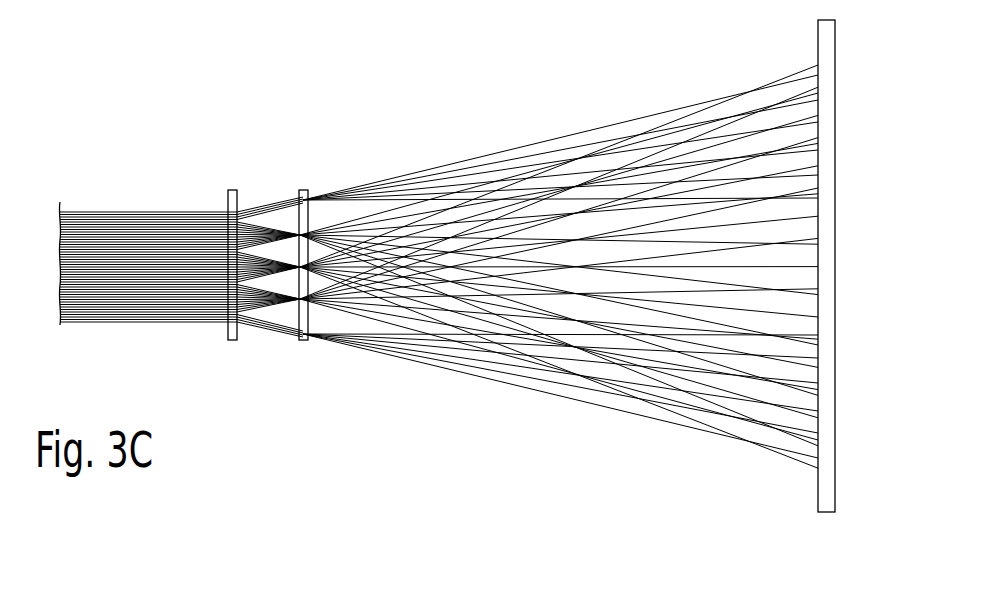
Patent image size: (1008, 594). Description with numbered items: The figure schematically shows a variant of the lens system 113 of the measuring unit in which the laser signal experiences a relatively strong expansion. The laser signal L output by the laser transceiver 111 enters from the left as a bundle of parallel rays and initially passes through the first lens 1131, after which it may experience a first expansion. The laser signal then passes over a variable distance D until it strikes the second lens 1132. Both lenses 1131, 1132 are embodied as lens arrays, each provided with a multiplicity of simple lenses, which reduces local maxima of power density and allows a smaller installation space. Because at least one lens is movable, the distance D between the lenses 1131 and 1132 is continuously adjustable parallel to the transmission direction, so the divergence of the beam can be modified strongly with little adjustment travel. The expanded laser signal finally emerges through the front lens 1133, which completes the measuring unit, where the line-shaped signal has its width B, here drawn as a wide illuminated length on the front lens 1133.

The laser transceiver 111 is at (59, 308).
The laser signal L is at (122, 214).
The lens system 113 is at (268, 239).
The first lens 1131 is at (229, 189).
The second lens 1132 is at (324, 239).
The front lens 1133 is at (838, 36).
The distance between the lenses D is at (306, 350).
The width of the laser signal B is at (845, 63).